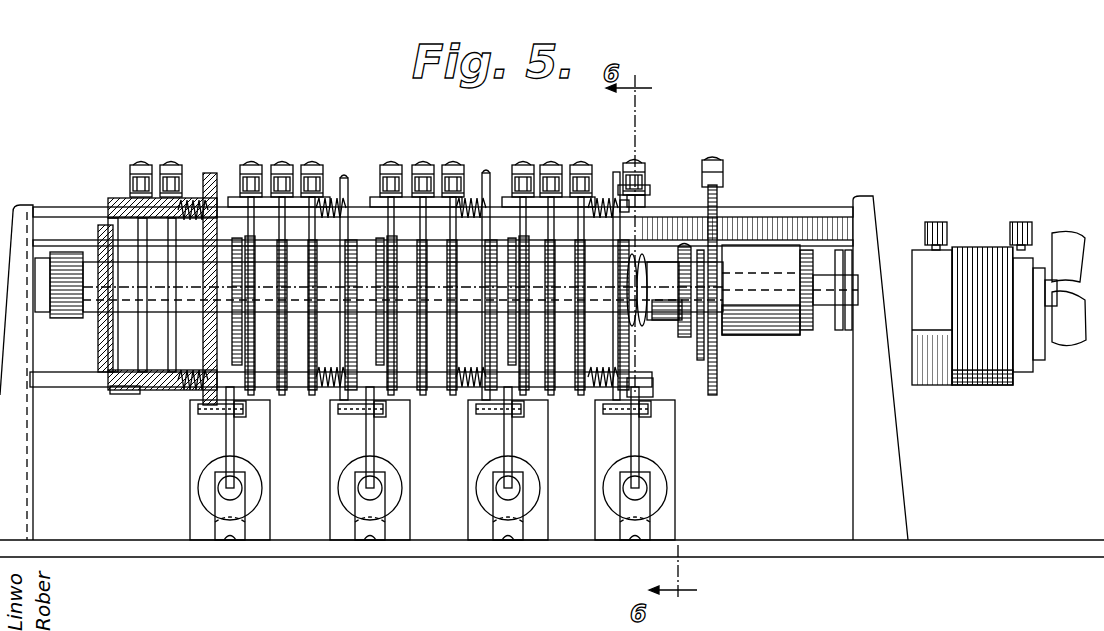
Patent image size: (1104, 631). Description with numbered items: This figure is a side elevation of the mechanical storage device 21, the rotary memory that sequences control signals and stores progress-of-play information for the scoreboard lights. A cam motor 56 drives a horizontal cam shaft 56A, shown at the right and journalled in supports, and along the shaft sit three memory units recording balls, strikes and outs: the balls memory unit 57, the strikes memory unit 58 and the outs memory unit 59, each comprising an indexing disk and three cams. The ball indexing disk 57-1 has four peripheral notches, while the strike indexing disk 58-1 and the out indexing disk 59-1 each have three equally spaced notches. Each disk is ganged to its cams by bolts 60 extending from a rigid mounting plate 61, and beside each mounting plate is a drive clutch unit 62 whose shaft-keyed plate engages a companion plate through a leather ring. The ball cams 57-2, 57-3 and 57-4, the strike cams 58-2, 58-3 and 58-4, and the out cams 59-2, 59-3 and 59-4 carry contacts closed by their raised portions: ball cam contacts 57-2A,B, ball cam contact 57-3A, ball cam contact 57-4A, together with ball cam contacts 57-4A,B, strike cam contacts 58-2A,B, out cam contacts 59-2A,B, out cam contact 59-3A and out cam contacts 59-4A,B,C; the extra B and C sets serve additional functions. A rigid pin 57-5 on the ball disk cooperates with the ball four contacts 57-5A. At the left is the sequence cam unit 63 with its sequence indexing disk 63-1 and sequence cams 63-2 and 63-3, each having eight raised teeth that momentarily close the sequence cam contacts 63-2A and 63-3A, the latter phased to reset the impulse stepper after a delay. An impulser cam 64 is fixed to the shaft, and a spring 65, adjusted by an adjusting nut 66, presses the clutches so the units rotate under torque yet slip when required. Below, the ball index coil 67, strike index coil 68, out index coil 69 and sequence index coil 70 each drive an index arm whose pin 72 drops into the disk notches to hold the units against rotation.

The mechanical storage device 21 is at (765, 128).
The cam motor 56 is at (972, 252).
The cam shaft 56A is at (830, 310).
The balls memory unit 57 is at (584, 158).
The ball indexing disk 57-1 is at (609, 275).
The ball cam 57-2 is at (580, 390).
The ball cam contacts 57-2A,B is at (580, 160).
The ball cam 57-3 is at (548, 365).
The ball cam contact 57-3A is at (488, 265).
The ball cam 57-4 is at (524, 392).
The ball cam contact 57-4A is at (520, 160).
The ball cam contacts 57-4A,B is at (390, 160).
The rigid pin 57-5 is at (648, 185).
The ball four contacts 57-5A is at (640, 156).
The strikes memory unit 58 is at (436, 160).
The strike indexing disk 58-1 is at (479, 278).
The strike cam 58-2 is at (453, 392).
The strike cam contacts 58-2A,B is at (450, 164).
The strike cam 58-3 is at (422, 387).
The strike cam 58-4 is at (392, 395).
The outs memory unit 59 is at (296, 160).
The out indexing disk 59-1 is at (343, 186).
The out cam 59-2 is at (315, 392).
The out cam contacts 59-2A,B is at (318, 164).
The out cam 59-3 is at (282, 388).
The out cam contact 59-3A is at (275, 265).
The out cam 59-4 is at (252, 395).
The out cam contacts 59-4A,B,C is at (248, 160).
The bolts 60 is at (122, 393).
The mounting plate 61 is at (108, 375).
The drive clutch unit 62 is at (100, 358).
The sequence cam unit 63 is at (160, 162).
The sequence indexing disk 63-1 is at (208, 175).
The sequence cam 63-2 is at (175, 392).
The sequence cam contact 63-2A is at (185, 164).
The sequence cam 63-3 is at (140, 392).
The sequence cam contact 63-3A is at (138, 163).
The impulser cam 64 is at (718, 392).
The spring 65 is at (640, 335).
The adjusting nut 66 is at (686, 250).
The ball index coil 67 is at (672, 476).
The strike index coil 68 is at (540, 462).
The out index coil 69 is at (402, 468).
The sequence index coil 70 is at (262, 473).
The pin 72 is at (208, 414).